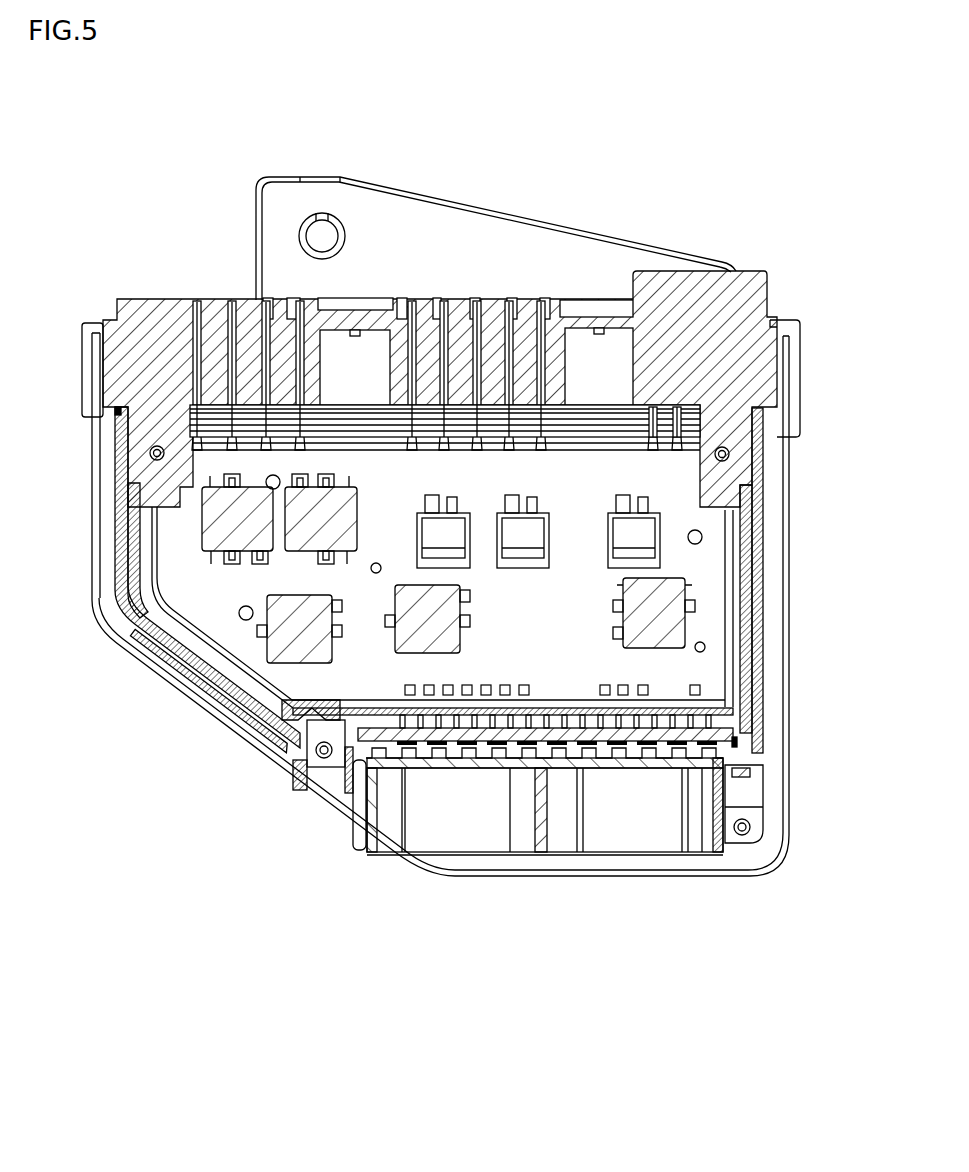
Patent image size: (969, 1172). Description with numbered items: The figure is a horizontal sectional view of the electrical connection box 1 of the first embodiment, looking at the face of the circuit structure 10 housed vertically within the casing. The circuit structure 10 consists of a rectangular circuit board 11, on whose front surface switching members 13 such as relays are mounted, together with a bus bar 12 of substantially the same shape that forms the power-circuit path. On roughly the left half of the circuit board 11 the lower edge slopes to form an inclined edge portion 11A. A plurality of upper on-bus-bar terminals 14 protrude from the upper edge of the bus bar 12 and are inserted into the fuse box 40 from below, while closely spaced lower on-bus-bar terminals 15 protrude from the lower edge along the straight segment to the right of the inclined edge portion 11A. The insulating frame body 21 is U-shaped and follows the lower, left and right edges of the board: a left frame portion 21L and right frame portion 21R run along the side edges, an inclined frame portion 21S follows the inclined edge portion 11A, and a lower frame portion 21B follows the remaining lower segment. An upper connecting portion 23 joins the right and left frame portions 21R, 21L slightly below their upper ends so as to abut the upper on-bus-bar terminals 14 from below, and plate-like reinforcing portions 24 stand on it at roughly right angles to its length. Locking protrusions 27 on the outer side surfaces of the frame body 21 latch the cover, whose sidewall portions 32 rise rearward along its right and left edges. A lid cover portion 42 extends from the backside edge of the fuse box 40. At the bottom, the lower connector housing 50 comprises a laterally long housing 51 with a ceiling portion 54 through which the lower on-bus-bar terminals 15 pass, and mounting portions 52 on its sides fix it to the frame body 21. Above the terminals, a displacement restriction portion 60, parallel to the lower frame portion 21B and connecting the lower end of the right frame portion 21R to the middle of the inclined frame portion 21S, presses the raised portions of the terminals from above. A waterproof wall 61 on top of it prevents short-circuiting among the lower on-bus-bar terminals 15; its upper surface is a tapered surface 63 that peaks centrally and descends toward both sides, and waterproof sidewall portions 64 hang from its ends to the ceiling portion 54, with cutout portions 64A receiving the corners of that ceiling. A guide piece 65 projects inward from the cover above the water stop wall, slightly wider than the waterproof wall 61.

The electrical connection box 1 is at (627, 133).
The circuit structure 10 is at (712, 537).
The circuit board 11 is at (712, 568).
The inclined edge portion 11A is at (180, 623).
The bus bar 12 is at (728, 660).
The switching members 13 is at (668, 612).
The upper on-bus-bar terminals 14 is at (237, 406).
The lower on-bus-bar terminals 15 is at (650, 748).
The frame body 21 is at (105, 620).
The left frame portion 21L is at (103, 487).
The right frame portion 21R is at (786, 692).
The inclined frame portion 21S is at (173, 680).
The lower frame portion 21B is at (545, 877).
The upper connecting portion 23 is at (607, 413).
The reinforcing portions 24 is at (690, 430).
The locking protrusions 27 is at (125, 520).
The sidewall portions 32 is at (135, 557).
The fuse box 40 is at (658, 277).
The lid cover portion 42 is at (410, 222).
The lower connector housing 50 is at (540, 830).
The housing 51 is at (453, 767).
The mounting portions 52 is at (742, 840).
The ceiling portion 54 is at (543, 803).
The displacement restriction portion 60 is at (735, 746).
The waterproof wall 61 is at (320, 714).
The tapered surface 63 is at (693, 718).
The waterproof sidewall portions 64 is at (335, 748).
The cutout portions 64A is at (378, 823).
The guide piece 65 is at (297, 707).